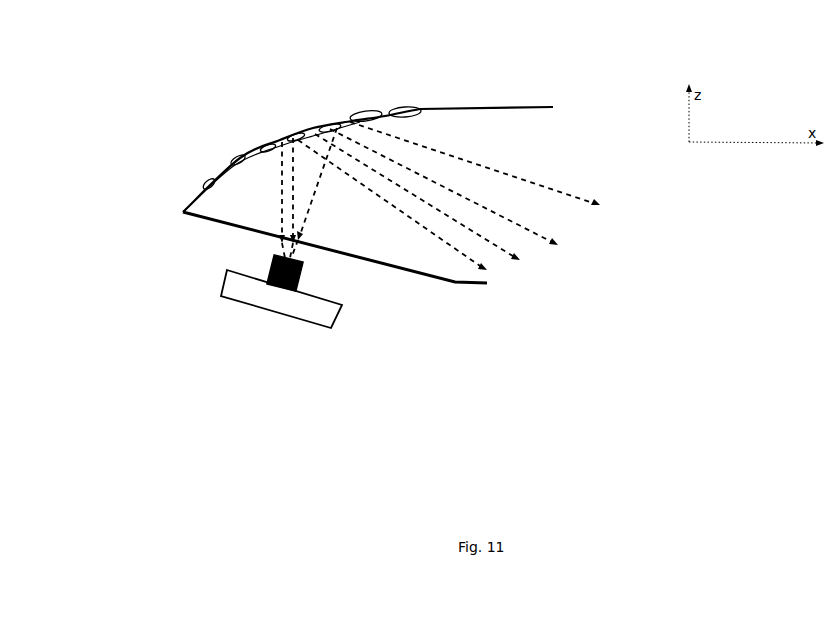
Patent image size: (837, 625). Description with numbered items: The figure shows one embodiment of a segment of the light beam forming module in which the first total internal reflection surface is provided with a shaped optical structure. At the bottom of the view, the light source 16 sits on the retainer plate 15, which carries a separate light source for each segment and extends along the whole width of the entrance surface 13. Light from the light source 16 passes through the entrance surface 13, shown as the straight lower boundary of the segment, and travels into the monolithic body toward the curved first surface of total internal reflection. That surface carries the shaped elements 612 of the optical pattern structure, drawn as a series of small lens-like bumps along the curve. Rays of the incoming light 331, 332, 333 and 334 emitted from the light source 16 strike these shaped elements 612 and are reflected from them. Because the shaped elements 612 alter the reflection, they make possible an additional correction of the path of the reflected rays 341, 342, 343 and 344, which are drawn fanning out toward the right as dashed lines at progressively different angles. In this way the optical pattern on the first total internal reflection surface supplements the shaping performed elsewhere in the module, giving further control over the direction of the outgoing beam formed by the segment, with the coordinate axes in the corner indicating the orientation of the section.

The entrance surface 13 is at (440, 295).
The retainer plate 15 is at (217, 300).
The light source 16 is at (262, 263).
The incoming light ray 331 is at (270, 195).
The incoming light ray 332 is at (283, 170).
The incoming light ray 333 is at (330, 126).
The incoming light ray 334 is at (327, 120).
The corrected light ray 341 is at (487, 270).
The corrected light ray 342 is at (520, 260).
The corrected light ray 343 is at (558, 245).
The corrected light ray 344 is at (600, 205).
The shaped elements of the optical pattern structure 612 is at (293, 133).